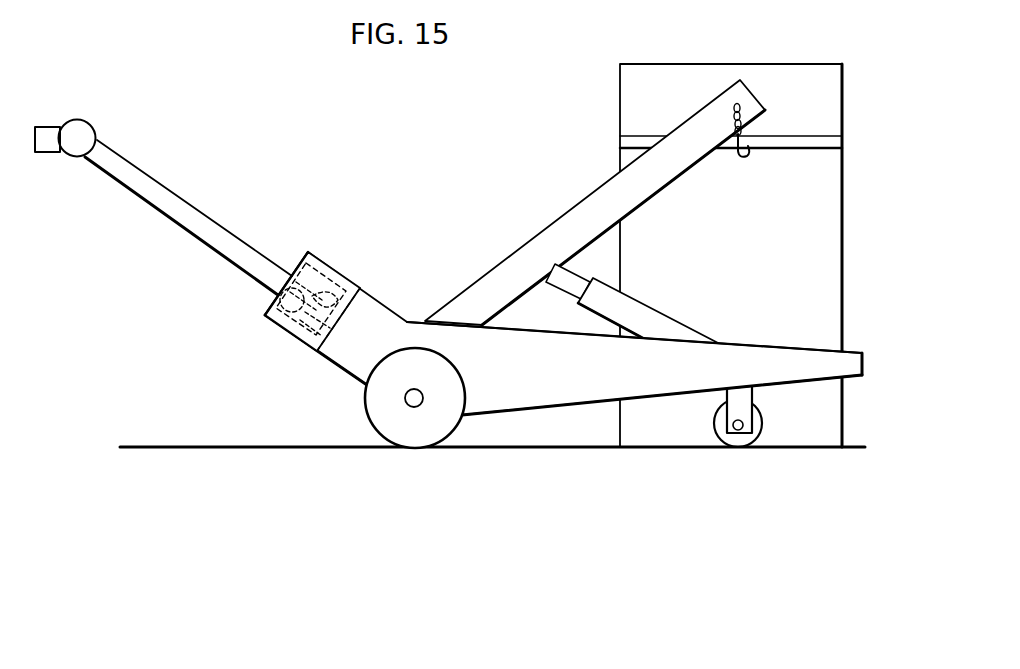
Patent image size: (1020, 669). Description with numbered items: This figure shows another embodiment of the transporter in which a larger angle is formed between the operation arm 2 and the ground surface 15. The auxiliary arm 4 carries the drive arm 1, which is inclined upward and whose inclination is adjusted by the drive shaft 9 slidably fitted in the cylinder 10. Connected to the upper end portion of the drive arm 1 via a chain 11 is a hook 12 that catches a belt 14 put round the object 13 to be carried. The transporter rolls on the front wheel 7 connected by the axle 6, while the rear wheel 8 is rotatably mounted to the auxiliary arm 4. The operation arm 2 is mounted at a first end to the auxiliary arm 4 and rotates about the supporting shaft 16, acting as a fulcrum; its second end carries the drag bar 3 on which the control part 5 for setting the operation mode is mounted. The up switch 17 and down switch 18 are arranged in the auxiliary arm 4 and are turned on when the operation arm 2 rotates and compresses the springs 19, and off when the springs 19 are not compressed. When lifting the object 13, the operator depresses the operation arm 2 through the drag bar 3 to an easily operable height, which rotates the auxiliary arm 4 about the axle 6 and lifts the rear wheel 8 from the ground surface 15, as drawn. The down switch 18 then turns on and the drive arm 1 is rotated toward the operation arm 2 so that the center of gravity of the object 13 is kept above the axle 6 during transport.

The drive arm 1 is at (514, 262).
The operation arm 2 is at (148, 198).
The drag bar 3 is at (73, 152).
The auxiliary arm 4 is at (858, 377).
The control part 5 is at (50, 127).
The axle 6 is at (406, 400).
The front wheel 7 is at (445, 426).
The rear wheel 8 is at (719, 428).
The drive shaft 9 is at (565, 285).
The cylinder 10 is at (670, 325).
The chain 11 is at (752, 88).
The hook 12 is at (749, 157).
The object 13 is at (826, 256).
The belt 14 is at (805, 143).
The ground surface 15 is at (802, 449).
The supporting shaft 16 is at (362, 288).
The up switch 17 is at (312, 252).
The down switch 18 is at (266, 318).
The spring 19 is at (302, 343).